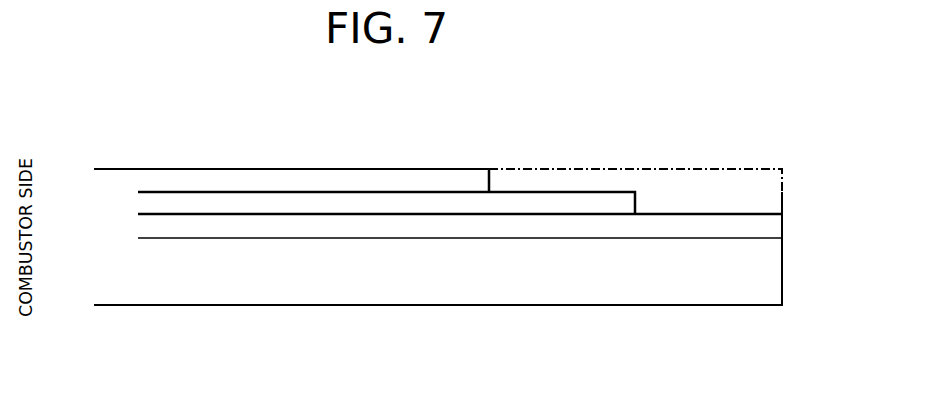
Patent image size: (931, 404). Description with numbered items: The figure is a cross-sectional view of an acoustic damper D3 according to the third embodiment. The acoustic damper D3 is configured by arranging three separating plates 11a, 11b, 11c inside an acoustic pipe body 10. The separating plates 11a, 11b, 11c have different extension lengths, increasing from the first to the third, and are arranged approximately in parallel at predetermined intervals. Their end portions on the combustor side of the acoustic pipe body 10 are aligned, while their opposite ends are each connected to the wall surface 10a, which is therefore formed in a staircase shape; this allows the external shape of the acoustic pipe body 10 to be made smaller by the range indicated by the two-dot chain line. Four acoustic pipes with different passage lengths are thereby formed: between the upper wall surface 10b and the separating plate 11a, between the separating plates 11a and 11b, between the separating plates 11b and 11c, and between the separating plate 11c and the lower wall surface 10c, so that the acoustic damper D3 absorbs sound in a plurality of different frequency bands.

The acoustic pipe body 10 is at (297, 169).
The wall surface 10a is at (780, 262).
The upper wall surface 10b is at (214, 169).
The lower wall surface 10c is at (336, 305).
The separating plate 11a is at (152, 192).
The separating plate 11b is at (152, 214).
The separating plate 11c is at (170, 240).
The acoustic damper D3 is at (696, 142).